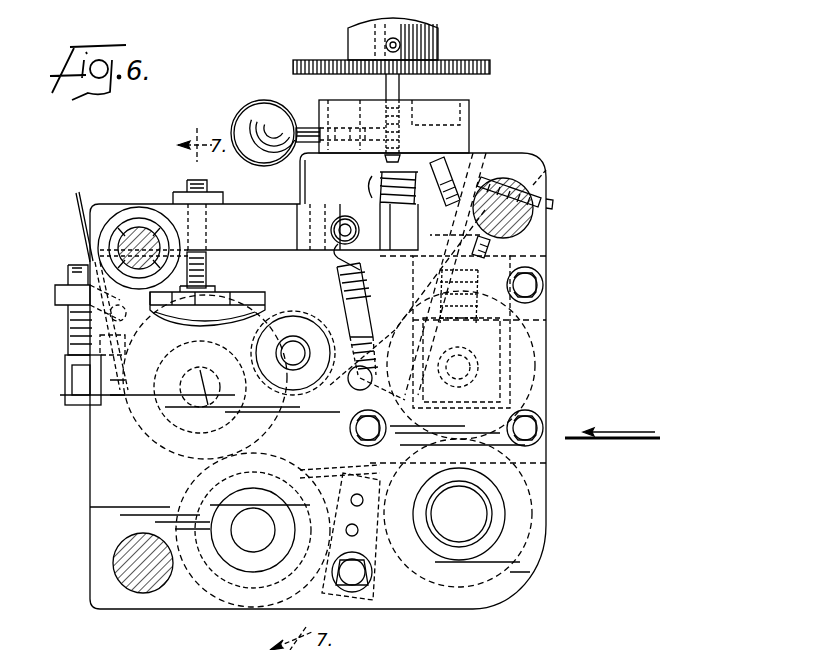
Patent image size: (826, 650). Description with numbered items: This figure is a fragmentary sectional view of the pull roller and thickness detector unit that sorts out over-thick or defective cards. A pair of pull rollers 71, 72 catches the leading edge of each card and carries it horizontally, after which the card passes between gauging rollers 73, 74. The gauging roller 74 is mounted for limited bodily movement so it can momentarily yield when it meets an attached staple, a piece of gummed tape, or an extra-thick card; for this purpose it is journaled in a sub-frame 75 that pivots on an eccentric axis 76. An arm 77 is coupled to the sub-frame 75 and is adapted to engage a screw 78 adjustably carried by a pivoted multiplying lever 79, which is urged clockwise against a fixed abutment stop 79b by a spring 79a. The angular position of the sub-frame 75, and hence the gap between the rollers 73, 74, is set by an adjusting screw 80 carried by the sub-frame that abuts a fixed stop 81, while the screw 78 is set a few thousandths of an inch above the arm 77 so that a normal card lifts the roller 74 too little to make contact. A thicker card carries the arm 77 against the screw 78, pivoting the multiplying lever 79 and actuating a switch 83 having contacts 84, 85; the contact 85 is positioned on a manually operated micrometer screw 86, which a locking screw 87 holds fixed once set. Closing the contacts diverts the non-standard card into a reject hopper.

The pull roller 71 is at (530, 506).
The pull roller 72 is at (527, 369).
The gauging roller 73 is at (200, 592).
The gauging roller 74 is at (163, 458).
The sub-frame 75 is at (252, 318).
The eccentric axis 76 is at (296, 342).
The arm 77 is at (232, 300).
The screw 78 is at (206, 268).
The multiplying lever 79 is at (246, 212).
The spring 79a is at (330, 240).
The fixed abutment stop 79b is at (325, 245).
The adjusting screw 80 is at (70, 324).
The fixed stop 81 is at (78, 382).
The switch 83 is at (470, 150).
The contact 84 is at (378, 184).
The contact 85 is at (402, 92).
The micrometer screw 86 is at (472, 70).
The locking screw 87 is at (269, 106).